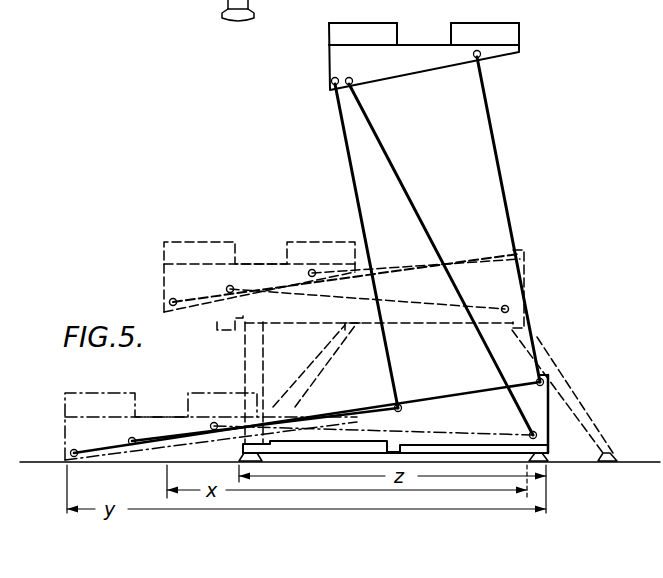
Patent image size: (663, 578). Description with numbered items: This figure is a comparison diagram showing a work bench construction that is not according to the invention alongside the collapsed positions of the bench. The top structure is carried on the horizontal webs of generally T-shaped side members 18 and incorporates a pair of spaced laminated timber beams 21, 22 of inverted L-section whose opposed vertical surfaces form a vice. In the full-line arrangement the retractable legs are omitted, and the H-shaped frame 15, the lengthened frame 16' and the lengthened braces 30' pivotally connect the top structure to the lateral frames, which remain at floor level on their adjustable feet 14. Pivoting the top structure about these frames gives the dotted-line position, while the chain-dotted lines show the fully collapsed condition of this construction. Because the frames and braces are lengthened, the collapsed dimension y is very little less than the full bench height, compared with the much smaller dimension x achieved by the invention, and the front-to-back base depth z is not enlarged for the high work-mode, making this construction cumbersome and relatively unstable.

The adjustable feet 14 is at (222, 14).
The H-shaped frame 15 is at (497, 162).
The lengthened H-shaped frame 16' is at (368, 248).
The T-shaped side member 18 is at (412, 62).
The laminated timber beam 21 is at (387, 38).
The rear laminated timber beam 22 is at (508, 38).
The lengthened brace 30' is at (443, 261).